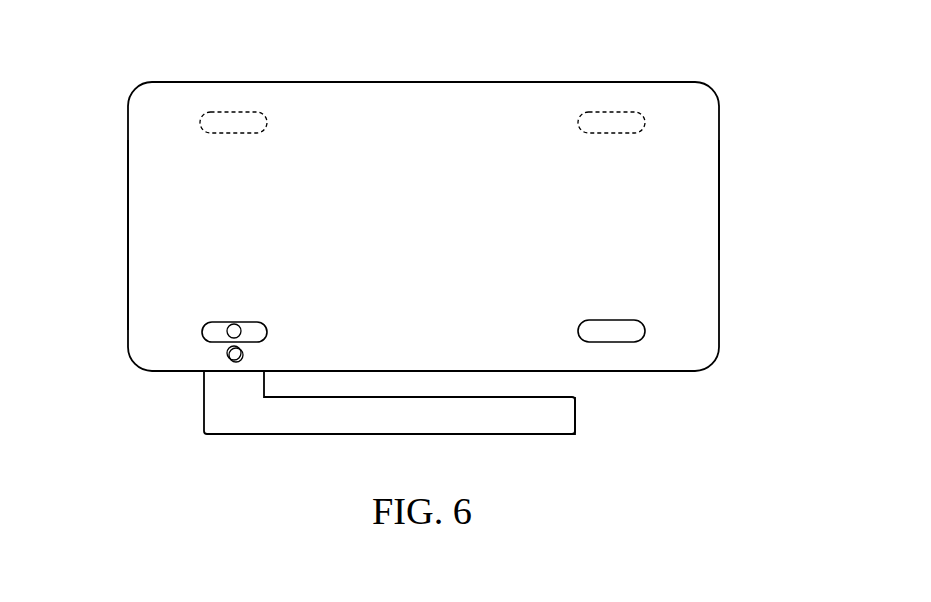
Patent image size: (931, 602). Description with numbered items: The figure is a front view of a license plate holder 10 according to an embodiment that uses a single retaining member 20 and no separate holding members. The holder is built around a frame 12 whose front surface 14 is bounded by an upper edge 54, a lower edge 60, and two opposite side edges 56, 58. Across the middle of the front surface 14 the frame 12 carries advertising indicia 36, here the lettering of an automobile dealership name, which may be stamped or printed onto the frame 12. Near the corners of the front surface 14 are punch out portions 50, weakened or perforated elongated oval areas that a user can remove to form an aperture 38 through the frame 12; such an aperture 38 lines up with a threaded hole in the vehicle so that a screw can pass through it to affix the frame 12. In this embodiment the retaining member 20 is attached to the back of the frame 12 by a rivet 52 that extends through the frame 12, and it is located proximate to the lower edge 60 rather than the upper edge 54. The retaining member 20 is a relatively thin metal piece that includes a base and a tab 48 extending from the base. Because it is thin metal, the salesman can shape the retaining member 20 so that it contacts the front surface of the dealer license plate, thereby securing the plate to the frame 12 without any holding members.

The license plate holder 10 is at (733, 68).
The frame 12 is at (158, 163).
The front surface 14 is at (378, 107).
The retaining member 20 is at (281, 418).
The advertising indicia 36 is at (182, 249).
The aperture 38 is at (226, 322).
The tab 48 is at (524, 425).
The punch out portion 50 is at (233, 120).
The rivet 52 is at (227, 354).
The upper edge 54 is at (458, 79).
The side edge 56 is at (126, 231).
The side edge 58 is at (722, 181).
The lower edge 60 is at (611, 374).